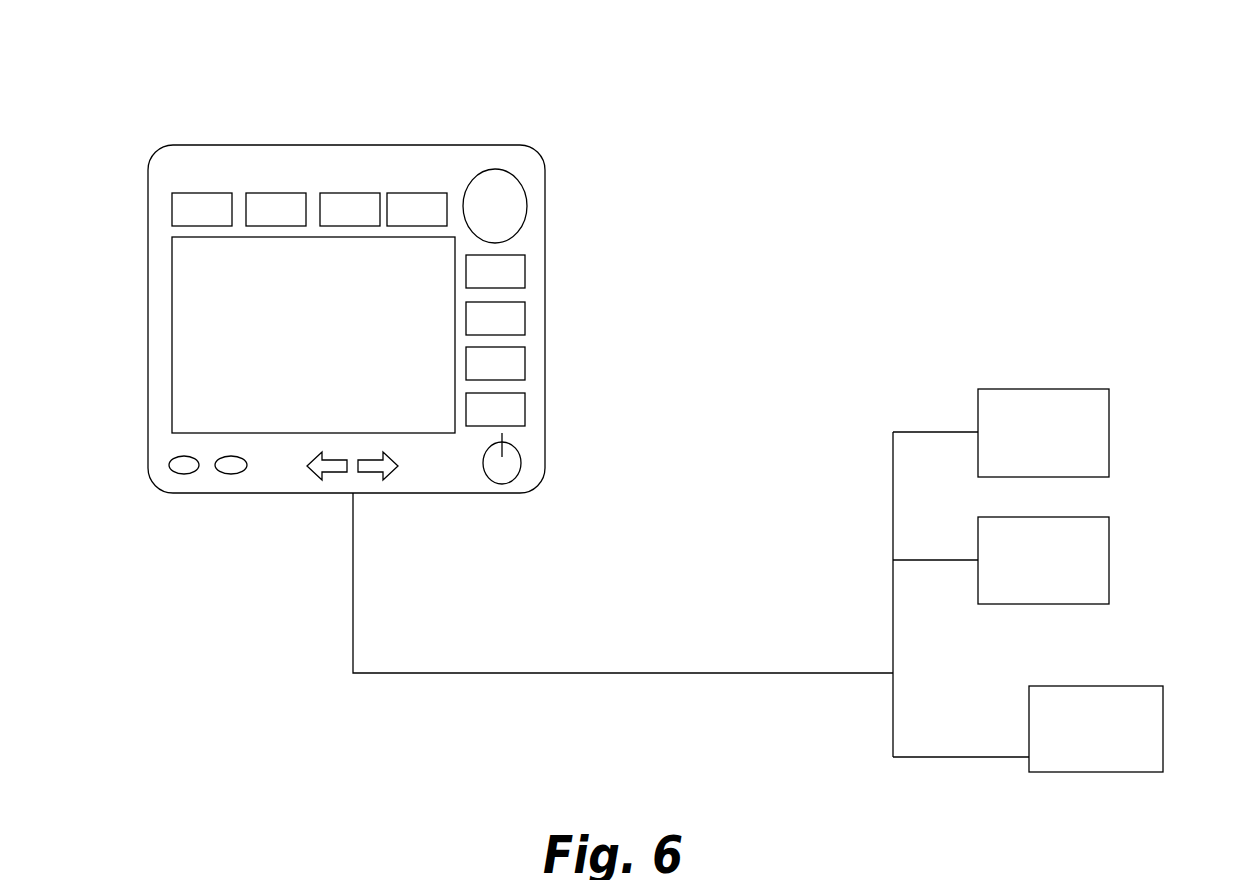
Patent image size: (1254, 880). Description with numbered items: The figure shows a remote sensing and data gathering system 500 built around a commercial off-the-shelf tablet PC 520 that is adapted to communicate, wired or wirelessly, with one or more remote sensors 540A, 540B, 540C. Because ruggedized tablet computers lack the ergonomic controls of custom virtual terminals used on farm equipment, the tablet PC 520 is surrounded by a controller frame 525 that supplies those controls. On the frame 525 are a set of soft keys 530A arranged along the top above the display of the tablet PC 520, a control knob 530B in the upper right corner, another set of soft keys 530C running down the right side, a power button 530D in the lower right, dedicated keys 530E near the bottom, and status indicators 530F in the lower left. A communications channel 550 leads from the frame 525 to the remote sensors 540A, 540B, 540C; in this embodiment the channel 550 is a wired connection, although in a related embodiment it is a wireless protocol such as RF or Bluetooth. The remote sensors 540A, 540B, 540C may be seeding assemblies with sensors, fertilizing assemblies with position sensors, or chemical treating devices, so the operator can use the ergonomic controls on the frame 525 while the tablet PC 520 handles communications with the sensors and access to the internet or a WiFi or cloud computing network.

The remote sensing and data gathering system 500 is at (85, 36).
The controller frame 525 is at (233, 146).
The tablet PC 520 is at (172, 332).
The set of soft keys 530A is at (434, 191).
The control knob 530B is at (534, 206).
The set of soft keys 530C is at (533, 321).
The power button 530D is at (524, 462).
The dedicated keys 530E is at (375, 481).
The status indicators 530F is at (184, 475).
The communications channel 550 is at (668, 676).
The remote sensor 540A is at (1109, 430).
The remote sensor 540B is at (1109, 555).
The remote sensor 540C is at (1163, 727).